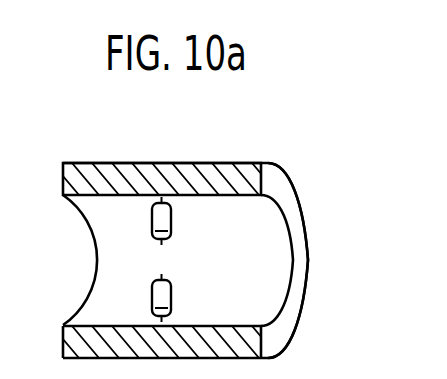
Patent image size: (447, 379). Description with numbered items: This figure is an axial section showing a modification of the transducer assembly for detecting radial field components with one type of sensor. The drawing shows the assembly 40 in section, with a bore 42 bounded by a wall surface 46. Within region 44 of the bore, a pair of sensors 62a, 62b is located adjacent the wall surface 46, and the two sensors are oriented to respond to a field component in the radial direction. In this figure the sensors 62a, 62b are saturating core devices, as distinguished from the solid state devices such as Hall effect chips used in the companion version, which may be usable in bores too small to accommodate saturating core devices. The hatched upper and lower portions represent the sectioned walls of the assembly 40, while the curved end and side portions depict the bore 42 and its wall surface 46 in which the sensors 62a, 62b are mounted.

The housing 40 is at (304, 196).
The bore 42 is at (98, 261).
The region 44 is at (154, 163).
The wall surface 46 is at (284, 260).
The sensor 62a is at (171, 223).
The sensor 62b is at (171, 297).